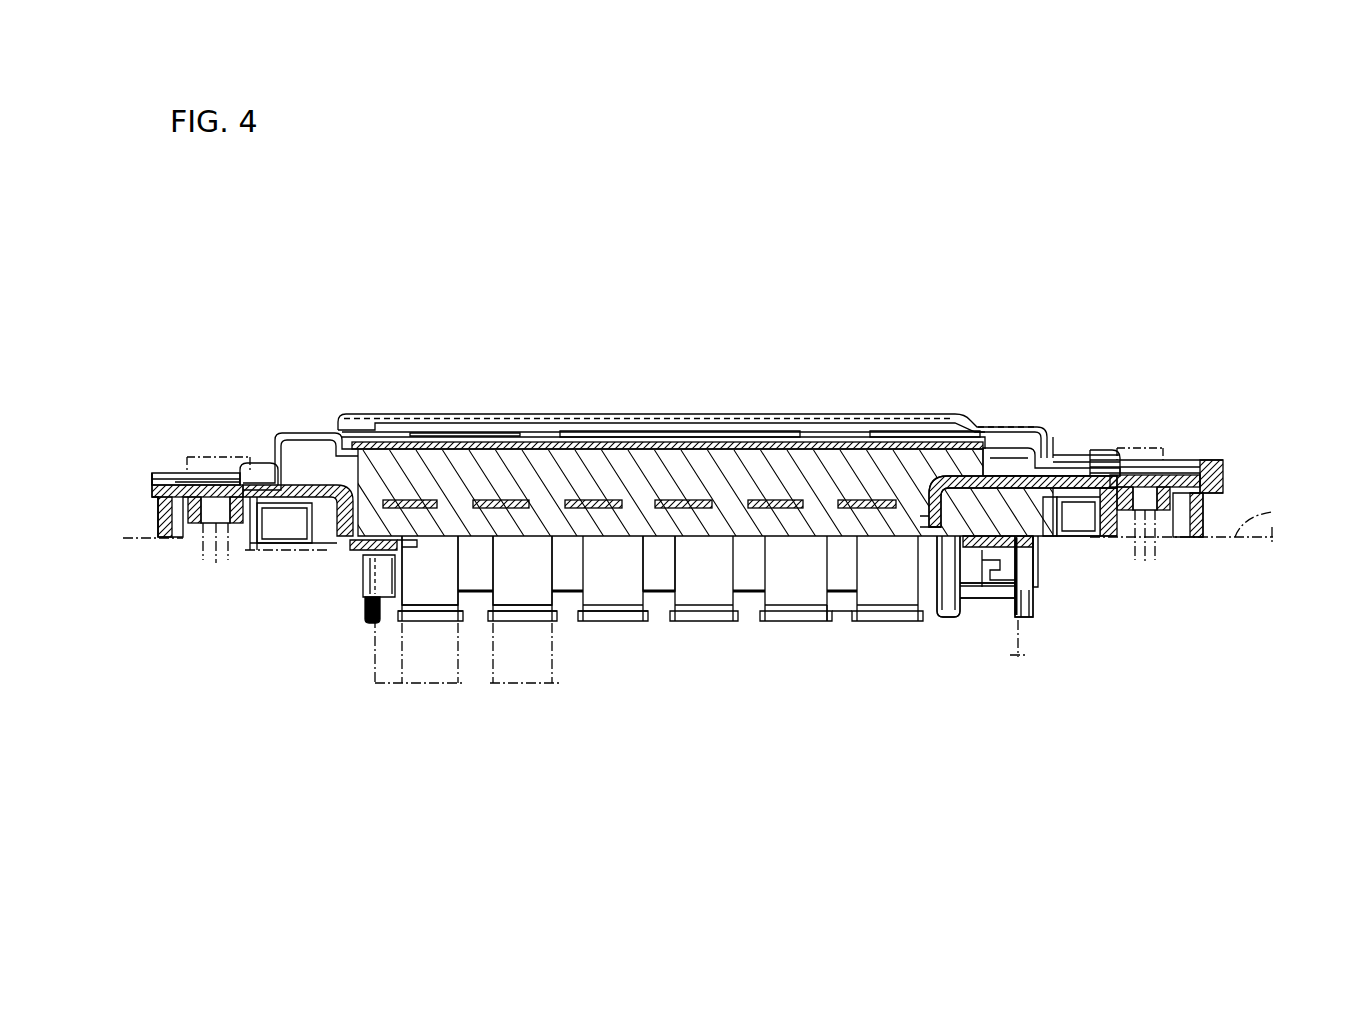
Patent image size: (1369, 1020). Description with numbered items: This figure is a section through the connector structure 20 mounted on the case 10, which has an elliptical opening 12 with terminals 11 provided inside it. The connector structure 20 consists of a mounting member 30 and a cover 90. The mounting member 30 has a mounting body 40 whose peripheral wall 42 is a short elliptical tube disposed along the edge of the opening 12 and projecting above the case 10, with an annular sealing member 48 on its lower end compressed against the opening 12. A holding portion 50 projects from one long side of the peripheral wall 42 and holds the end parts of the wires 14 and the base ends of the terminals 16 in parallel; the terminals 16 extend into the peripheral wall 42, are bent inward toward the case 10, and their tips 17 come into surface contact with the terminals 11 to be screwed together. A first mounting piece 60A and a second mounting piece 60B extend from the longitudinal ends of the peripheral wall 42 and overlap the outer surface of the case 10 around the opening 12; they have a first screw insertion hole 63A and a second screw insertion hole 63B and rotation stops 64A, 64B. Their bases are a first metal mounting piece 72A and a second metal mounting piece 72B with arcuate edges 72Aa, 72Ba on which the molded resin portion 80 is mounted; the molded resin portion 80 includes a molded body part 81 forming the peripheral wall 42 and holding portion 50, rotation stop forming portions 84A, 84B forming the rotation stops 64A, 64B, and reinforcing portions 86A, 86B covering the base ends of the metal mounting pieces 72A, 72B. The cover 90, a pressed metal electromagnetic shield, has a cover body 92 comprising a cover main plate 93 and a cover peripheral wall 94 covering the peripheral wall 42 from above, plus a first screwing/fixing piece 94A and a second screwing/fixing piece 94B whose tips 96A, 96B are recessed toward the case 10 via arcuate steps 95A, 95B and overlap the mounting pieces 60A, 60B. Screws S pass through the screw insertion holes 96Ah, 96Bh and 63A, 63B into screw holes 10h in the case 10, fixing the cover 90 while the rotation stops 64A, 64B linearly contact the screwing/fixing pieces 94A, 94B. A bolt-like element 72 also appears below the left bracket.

The case 10 is at (718, 519).
The screw hole 10h is at (208, 540).
The terminals 11 is at (452, 645).
The opening 12 is at (1106, 540).
The wires 14 is at (600, 499).
The terminals 16 is at (688, 621).
The tips 17 is at (423, 622).
The connector structure 20 is at (896, 348).
The mounting member 30 is at (787, 647).
The mounting body 40 is at (840, 605).
The peripheral wall 42 is at (1030, 556).
The annular sealing member 48 is at (1035, 560).
The holding portion 50 is at (708, 541).
The first mounting piece 60A is at (148, 498).
The second mounting piece 60B is at (1232, 458).
The first screw insertion hole 63A is at (234, 470).
The second screw insertion hole 63B is at (1155, 462).
The rotation stop 64A is at (175, 469).
The rotation stop 64B is at (1190, 470).
The bolt 72 is at (335, 555).
The first metal mounting piece 72A is at (305, 481).
The arcuate edge 72Aa is at (156, 500).
The second metal mounting piece 72B is at (1102, 478).
The arcuate edge 72Ba is at (1225, 477).
The molded resin portion 80 is at (882, 540).
The molded body part 81 is at (737, 460).
The rotation stop forming portion 84A is at (152, 476).
The rotation stop forming portion 84B is at (1215, 466).
The reinforcing portion 86A is at (292, 546).
The reinforcing portion 86B is at (1092, 538).
The cover 90 is at (567, 409).
The cover body 92 is at (668, 431).
The cover main plate 93 is at (772, 436).
The cover peripheral wall 94 is at (1045, 450).
The first screwing/fixing piece 94A is at (188, 473).
The second screwing/fixing piece 94B is at (1203, 500).
The arcuate step 95A is at (272, 547).
The arcuate step 95B is at (990, 556).
The tip part 96A is at (193, 490).
The screw insertion hole 96Ah is at (200, 526).
The tip 96B is at (1126, 486).
The screw insertion hole 96Bh is at (1142, 520).
The screws S is at (218, 456).